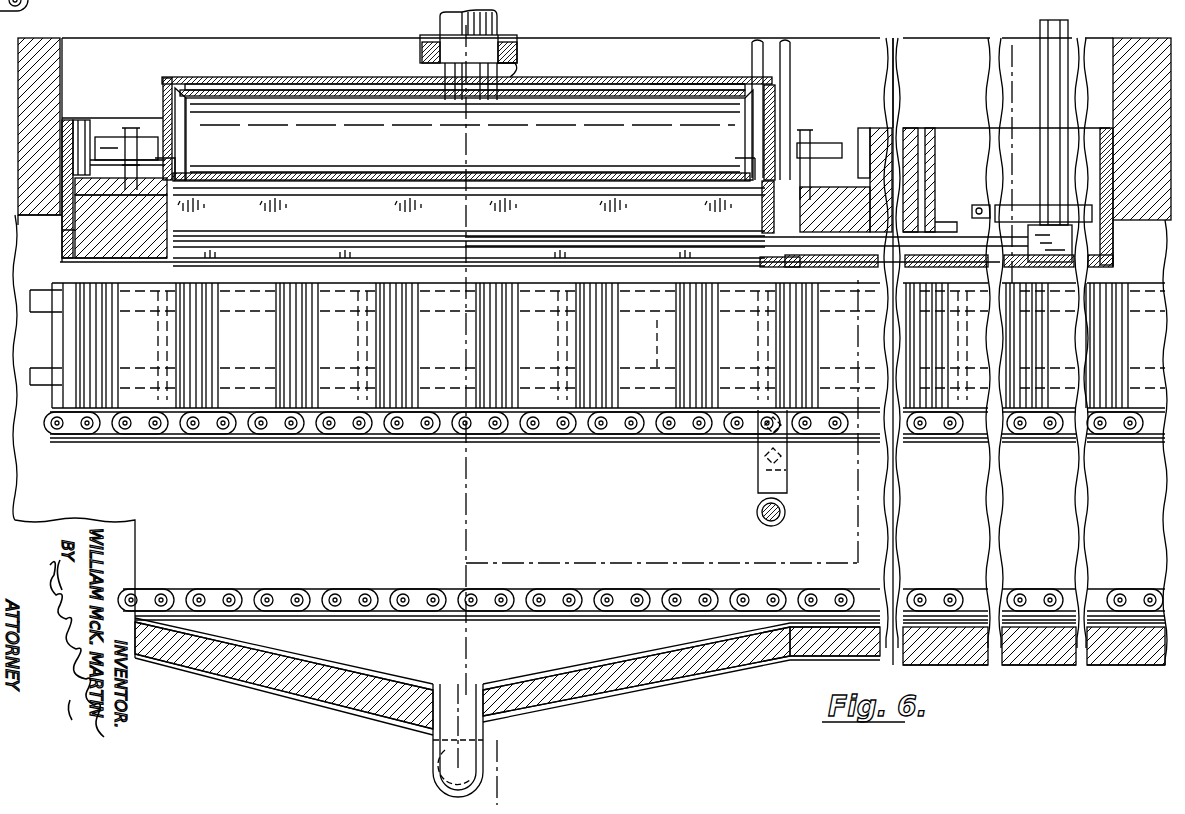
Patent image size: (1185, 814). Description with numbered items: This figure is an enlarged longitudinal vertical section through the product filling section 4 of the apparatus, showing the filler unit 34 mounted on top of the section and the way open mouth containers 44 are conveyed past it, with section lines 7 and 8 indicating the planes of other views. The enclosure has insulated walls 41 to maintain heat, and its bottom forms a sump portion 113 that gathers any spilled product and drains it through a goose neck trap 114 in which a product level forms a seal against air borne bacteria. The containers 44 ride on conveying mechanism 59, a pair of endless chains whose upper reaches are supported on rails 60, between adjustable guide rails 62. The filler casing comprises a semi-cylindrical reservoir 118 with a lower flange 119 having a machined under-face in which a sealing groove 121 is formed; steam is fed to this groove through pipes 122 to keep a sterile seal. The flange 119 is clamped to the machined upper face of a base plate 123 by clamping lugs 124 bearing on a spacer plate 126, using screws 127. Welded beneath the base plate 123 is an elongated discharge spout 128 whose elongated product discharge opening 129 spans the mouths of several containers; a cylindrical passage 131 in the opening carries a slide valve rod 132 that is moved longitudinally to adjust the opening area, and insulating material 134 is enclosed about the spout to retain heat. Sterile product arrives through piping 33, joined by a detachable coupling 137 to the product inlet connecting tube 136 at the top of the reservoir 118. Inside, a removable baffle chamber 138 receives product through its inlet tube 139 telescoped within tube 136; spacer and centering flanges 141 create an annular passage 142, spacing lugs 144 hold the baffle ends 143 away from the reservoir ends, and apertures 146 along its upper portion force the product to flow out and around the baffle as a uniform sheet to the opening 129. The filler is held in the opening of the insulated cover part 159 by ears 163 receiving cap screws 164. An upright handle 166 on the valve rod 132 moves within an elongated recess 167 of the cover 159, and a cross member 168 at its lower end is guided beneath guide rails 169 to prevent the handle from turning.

The product filling section 4 is at (872, 34).
The section line 7- 7 is at (475, 25).
The section line 8- 8 is at (975, 52).
The piping 33 is at (498, 17).
The filler unit 34 is at (600, 84).
The insulated walls 41 is at (44, 48).
The containers 44 is at (533, 274).
The conveying mechanism 59 is at (312, 436).
The rails 60 is at (236, 443).
The guide rails 62 is at (658, 333).
The sump portion 113 is at (600, 700).
The goose neck trap 114 is at (433, 768).
The reservoir 118 is at (298, 77).
The flange 119 is at (168, 162).
The groove 121 is at (172, 198).
The pipes 122 is at (752, 58).
The base plate 123 is at (62, 246).
The clamping lugs 124 is at (110, 137).
The spacer plate 126 is at (60, 224).
The screws 127 is at (135, 160).
The discharge spout 128 is at (473, 223).
The product discharge opening 129 is at (272, 262).
The cylindrical passage 131 is at (312, 241).
The slide valve rod 132 is at (640, 247).
The insulating material 134 is at (126, 262).
The product inlet connecting tube 136 is at (510, 78).
The detachable coupling 137 is at (432, 48).
The baffle chamber 138 is at (465, 139).
The product inlet tube 139 is at (478, 100).
The spacer and centering flanges 141 is at (200, 178).
The annular passage 142 is at (640, 84).
The ends of the baffle 143 is at (168, 90).
The spacing lugs 144 is at (172, 118).
The apertures 146 is at (342, 90).
The insulated cover part 159 is at (930, 52).
The ears 163 is at (78, 122).
The cap screws 164 is at (86, 128).
The upright handle 166 is at (1046, 24).
The elongated recess 167 is at (975, 140).
The cross member 168 is at (1072, 246).
The guide rails 169 is at (1020, 207).